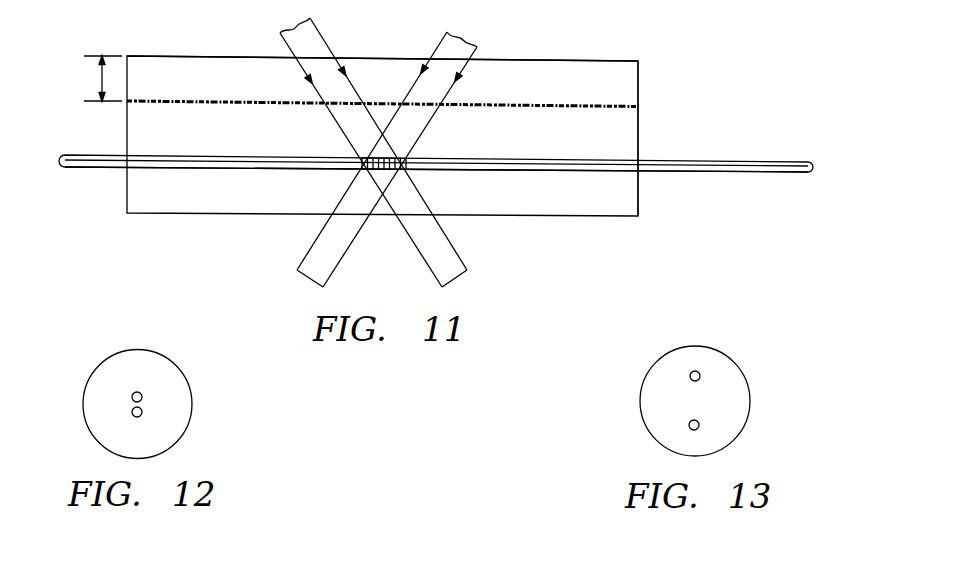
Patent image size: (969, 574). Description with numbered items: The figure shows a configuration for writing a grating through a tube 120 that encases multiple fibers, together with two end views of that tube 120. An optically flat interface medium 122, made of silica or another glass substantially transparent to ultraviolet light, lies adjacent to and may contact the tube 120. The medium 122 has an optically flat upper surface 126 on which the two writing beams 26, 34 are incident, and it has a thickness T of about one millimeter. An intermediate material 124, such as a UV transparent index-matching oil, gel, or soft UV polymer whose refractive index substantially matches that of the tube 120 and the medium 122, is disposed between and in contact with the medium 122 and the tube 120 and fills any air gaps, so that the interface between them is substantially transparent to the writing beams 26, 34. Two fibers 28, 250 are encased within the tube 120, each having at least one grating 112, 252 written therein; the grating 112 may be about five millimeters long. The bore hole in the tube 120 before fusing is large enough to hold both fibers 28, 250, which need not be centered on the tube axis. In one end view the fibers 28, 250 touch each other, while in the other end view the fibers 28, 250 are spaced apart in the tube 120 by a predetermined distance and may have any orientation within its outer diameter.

In FIG. 11, the thickness T is at (101, 81).
In FIG. 11, the writing beam 26 is at (284, 32).
In FIG. 11, the writing beam 34 is at (468, 44).
In FIG. 11, the fiber 28 is at (692, 160).
In FIG. 12, the fiber 28 is at (142, 396).
In FIG. 13, the fiber 28 is at (692, 372).
In FIG. 11, the grating 112 is at (367, 156).
In FIG. 11, the tube 120 is at (126, 128).
In FIG. 12, the tube 120 is at (111, 354).
In FIG. 13, the tube 120 is at (743, 363).
In FIG. 11, the interface medium 122 is at (637, 73).
In FIG. 11, the intermediate material 124 is at (640, 106).
In FIG. 11, the upper surface 126 is at (577, 58).
In FIG. 11, the fiber 250 is at (679, 174).
In FIG. 12, the fiber 250 is at (143, 412).
In FIG. 13, the fiber 250 is at (689, 425).
In FIG. 11, the grating 252 is at (362, 166).